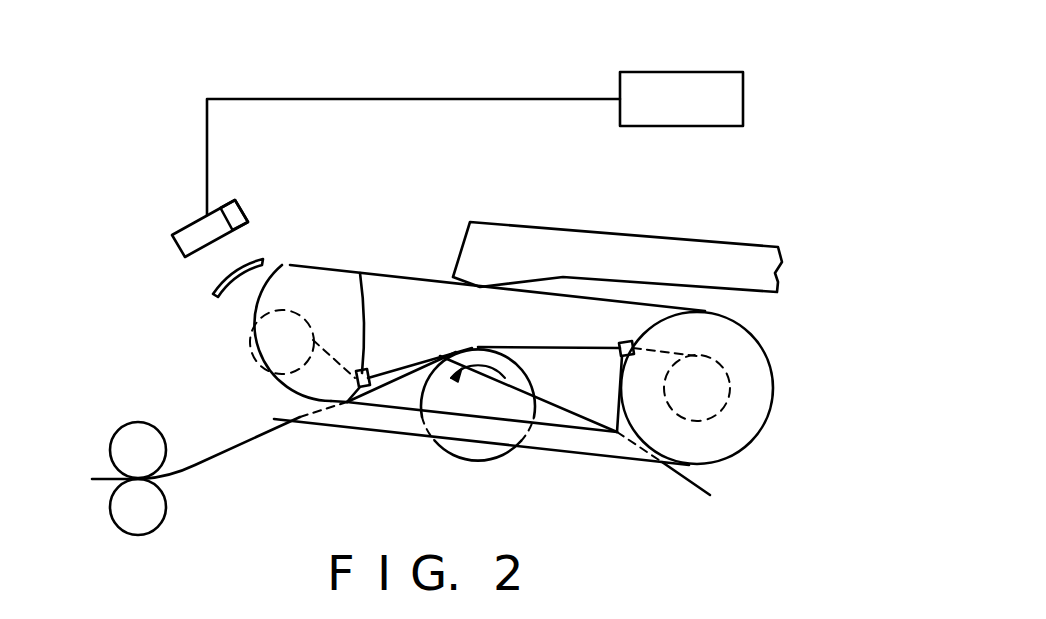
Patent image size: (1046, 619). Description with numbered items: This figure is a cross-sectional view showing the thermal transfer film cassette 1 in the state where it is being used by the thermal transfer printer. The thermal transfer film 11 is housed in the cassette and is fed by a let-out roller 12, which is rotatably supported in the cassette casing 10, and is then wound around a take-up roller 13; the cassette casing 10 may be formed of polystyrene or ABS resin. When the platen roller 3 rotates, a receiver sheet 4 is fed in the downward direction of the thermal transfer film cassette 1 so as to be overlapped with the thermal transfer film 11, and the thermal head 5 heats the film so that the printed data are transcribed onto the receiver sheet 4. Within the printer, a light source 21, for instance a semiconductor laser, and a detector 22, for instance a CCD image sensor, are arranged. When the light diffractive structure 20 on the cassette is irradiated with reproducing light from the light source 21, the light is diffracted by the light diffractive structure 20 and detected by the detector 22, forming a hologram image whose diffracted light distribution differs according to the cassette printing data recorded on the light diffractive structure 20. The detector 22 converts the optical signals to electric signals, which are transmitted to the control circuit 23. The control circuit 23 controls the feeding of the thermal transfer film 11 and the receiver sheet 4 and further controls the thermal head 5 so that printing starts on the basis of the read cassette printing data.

The thermal transfer film cassette 1 is at (280, 273).
The platen roller 3 is at (475, 463).
The receiver sheet 4 is at (225, 453).
The thermal head 5 is at (485, 235).
The cassette casing 10 is at (207, 322).
The thermal transfer film 11 is at (390, 363).
The let-out roller 12 is at (718, 410).
The take-up roller 13 is at (243, 355).
The light diffractive structure 20 is at (225, 278).
The light source 21 is at (235, 213).
The detector 22 is at (188, 232).
The control circuit 23 is at (678, 73).